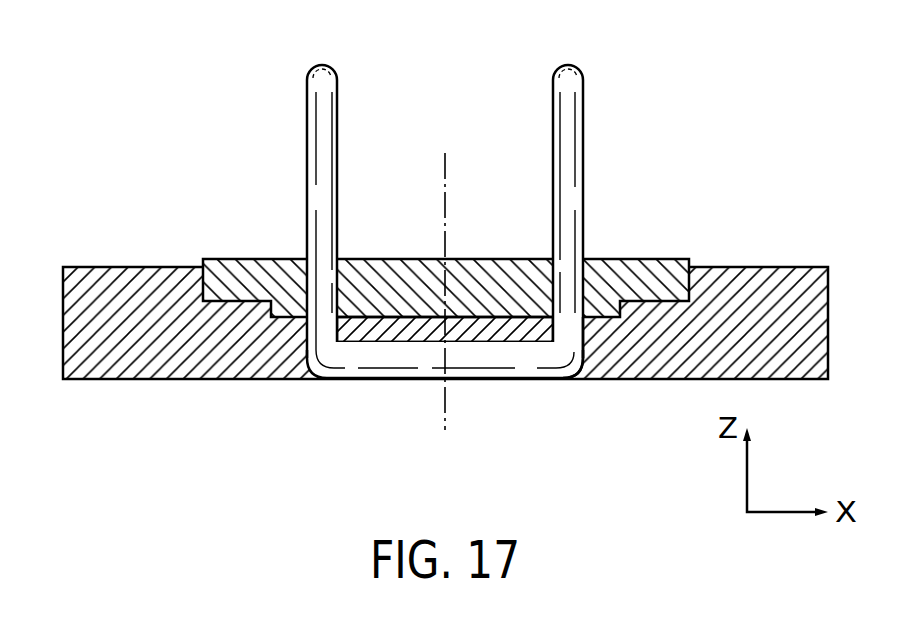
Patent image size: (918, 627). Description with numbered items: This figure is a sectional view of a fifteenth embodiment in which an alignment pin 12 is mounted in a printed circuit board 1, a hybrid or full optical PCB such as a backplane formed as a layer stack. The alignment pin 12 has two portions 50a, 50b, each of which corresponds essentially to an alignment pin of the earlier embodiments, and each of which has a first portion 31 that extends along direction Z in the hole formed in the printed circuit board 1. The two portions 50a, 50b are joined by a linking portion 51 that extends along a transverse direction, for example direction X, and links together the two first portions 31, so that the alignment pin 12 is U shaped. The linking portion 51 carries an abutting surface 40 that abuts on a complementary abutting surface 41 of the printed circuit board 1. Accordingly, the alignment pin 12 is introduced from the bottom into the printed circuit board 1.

The printed circuit board 1 is at (238, 401).
The alignment pin 12 is at (648, 166).
The first portion 31 is at (578, 340).
The second abutting surface 40 is at (425, 343).
The abutting surface of the printed circuit board 41 is at (505, 338).
The first portion of the alignment pin 50a is at (316, 138).
The second portion of the alignment pin 50b is at (576, 108).
The linking portion 51 is at (360, 373).